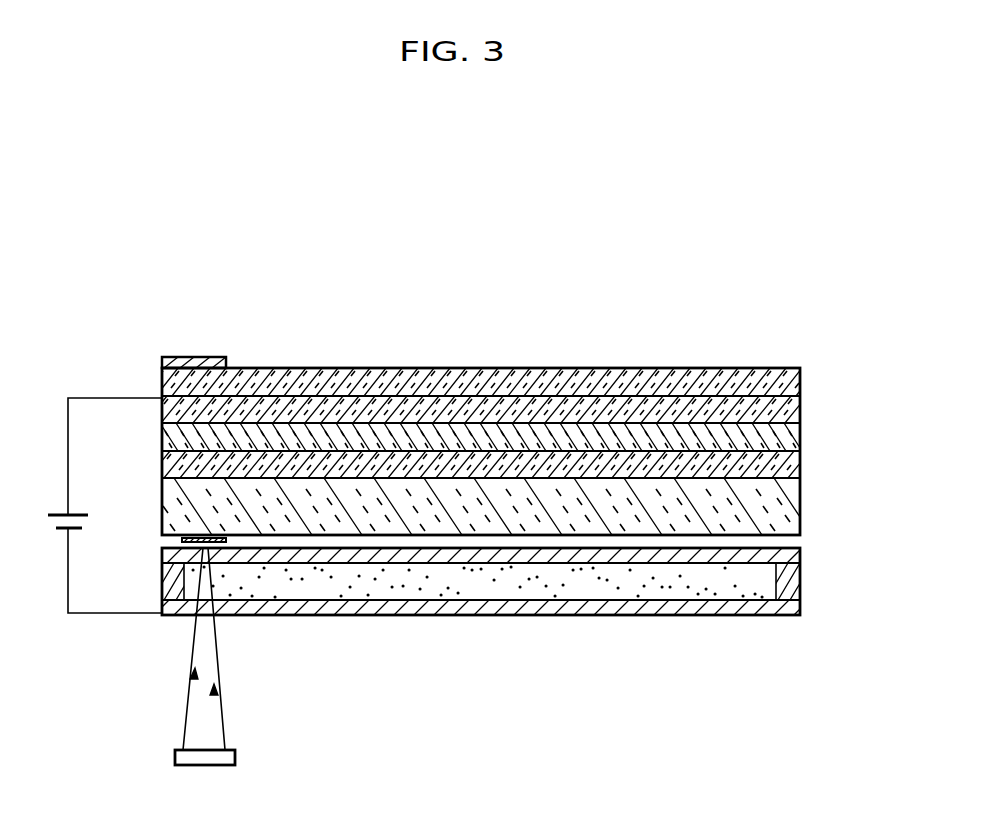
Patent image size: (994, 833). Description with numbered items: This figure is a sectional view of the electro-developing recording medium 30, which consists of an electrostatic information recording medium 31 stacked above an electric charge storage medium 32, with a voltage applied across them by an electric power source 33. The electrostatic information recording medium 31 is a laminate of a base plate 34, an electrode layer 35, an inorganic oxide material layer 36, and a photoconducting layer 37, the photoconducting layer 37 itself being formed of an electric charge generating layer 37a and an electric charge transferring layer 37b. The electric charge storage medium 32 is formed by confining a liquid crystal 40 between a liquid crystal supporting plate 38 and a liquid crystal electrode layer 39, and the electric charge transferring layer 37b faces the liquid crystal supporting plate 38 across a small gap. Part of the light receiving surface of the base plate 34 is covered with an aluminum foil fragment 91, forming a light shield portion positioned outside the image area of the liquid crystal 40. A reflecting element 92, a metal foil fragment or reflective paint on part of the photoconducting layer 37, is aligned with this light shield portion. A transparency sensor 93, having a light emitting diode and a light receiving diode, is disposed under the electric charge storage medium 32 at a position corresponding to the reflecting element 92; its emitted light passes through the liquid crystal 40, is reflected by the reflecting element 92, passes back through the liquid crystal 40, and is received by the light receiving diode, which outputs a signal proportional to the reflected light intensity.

The electro-developing recording medium 30 is at (473, 394).
The electrostatic information recording medium 31 is at (473, 413).
The electric charge storage medium 32 is at (501, 621).
The electric power source 33 is at (55, 505).
The base plate 34 is at (730, 372).
The electrode layer 35 is at (802, 397).
The inorganic oxide material layer 36 is at (795, 437).
The photoconducting layer 37 is at (470, 486).
The electric charge generating layer 37a is at (168, 468).
The electric charge transferring layer 37b is at (168, 508).
The liquid crystal supporting plate 38 is at (802, 549).
The liquid crystal electrode layer 39 is at (348, 607).
The liquid crystal 40 is at (460, 585).
The aluminum foil fragment 91 is at (190, 357).
The reflecting element 92 is at (182, 541).
The transparency sensor 93 is at (203, 767).